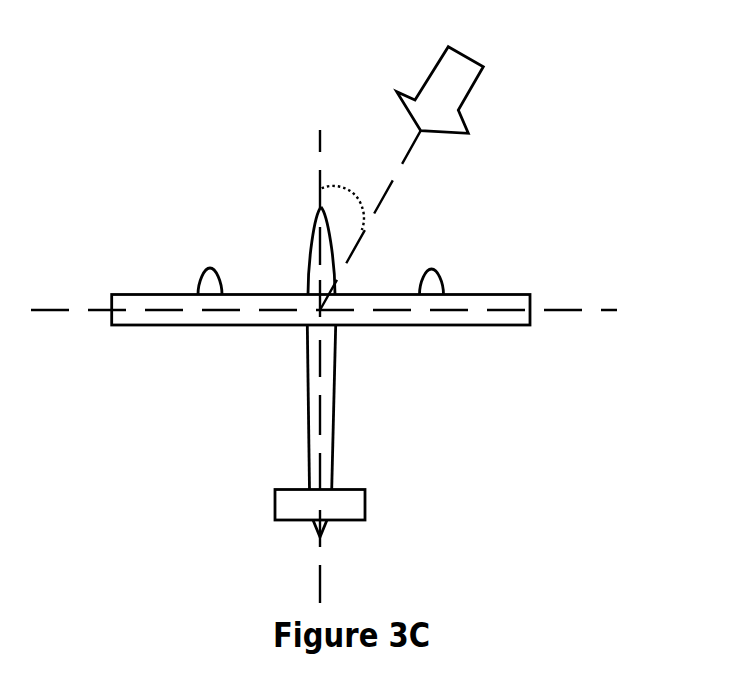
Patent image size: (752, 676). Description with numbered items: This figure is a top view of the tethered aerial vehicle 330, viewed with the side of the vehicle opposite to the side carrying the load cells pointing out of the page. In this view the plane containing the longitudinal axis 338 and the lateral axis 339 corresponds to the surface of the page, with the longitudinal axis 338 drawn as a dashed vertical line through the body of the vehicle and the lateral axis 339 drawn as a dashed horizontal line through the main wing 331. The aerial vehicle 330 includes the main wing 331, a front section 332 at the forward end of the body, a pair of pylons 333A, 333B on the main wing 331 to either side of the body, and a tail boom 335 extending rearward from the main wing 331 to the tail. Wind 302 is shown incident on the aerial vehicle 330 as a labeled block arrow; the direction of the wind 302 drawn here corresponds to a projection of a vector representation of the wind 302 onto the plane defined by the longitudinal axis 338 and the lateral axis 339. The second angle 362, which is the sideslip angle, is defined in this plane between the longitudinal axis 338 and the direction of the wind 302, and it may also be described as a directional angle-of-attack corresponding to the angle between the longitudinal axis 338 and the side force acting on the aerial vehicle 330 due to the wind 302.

The aerial vehicle 330 is at (76, 58).
The wind 302 is at (461, 110).
The longitudinal axis 338 is at (319, 142).
The second angle 362 is at (352, 176).
The pylon 333A is at (207, 267).
The pylon 333B is at (435, 269).
The front section 332 is at (311, 240).
The main wing 331 is at (495, 293).
The lateral axis 339 is at (601, 309).
The tail boom 335 is at (306, 377).